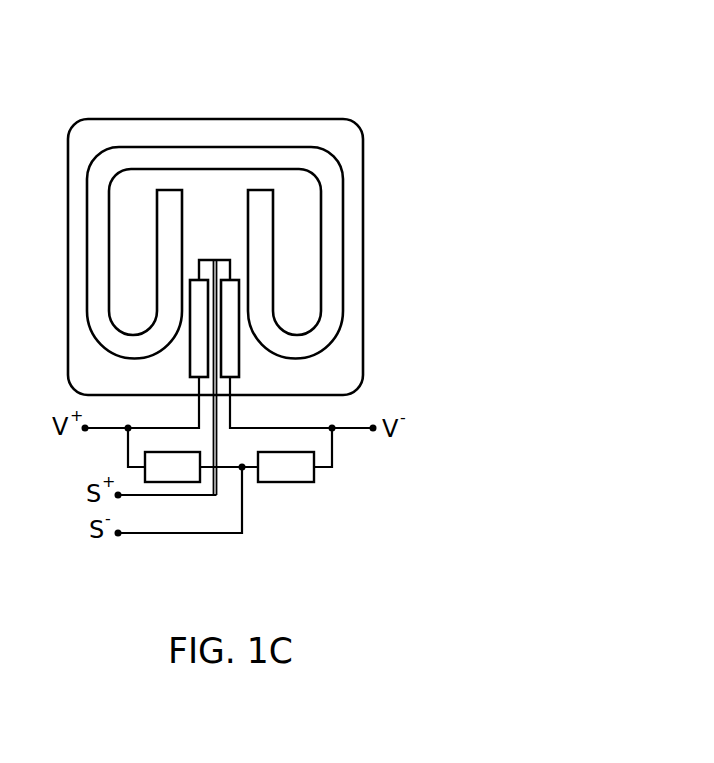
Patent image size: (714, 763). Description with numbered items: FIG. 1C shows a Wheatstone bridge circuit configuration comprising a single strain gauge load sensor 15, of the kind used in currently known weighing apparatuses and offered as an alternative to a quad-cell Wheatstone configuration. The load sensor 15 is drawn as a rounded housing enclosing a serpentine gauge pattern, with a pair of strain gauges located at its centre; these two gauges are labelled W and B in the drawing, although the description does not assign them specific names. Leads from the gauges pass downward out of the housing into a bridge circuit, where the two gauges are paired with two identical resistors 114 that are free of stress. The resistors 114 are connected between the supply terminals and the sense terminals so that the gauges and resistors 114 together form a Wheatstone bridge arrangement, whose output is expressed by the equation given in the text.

The single strain gauge load sensor 15 is at (360, 82).
The heating wire element W is at (200, 328).
The bridge/bond element B is at (228, 330).
The resistor 114 is at (180, 483).